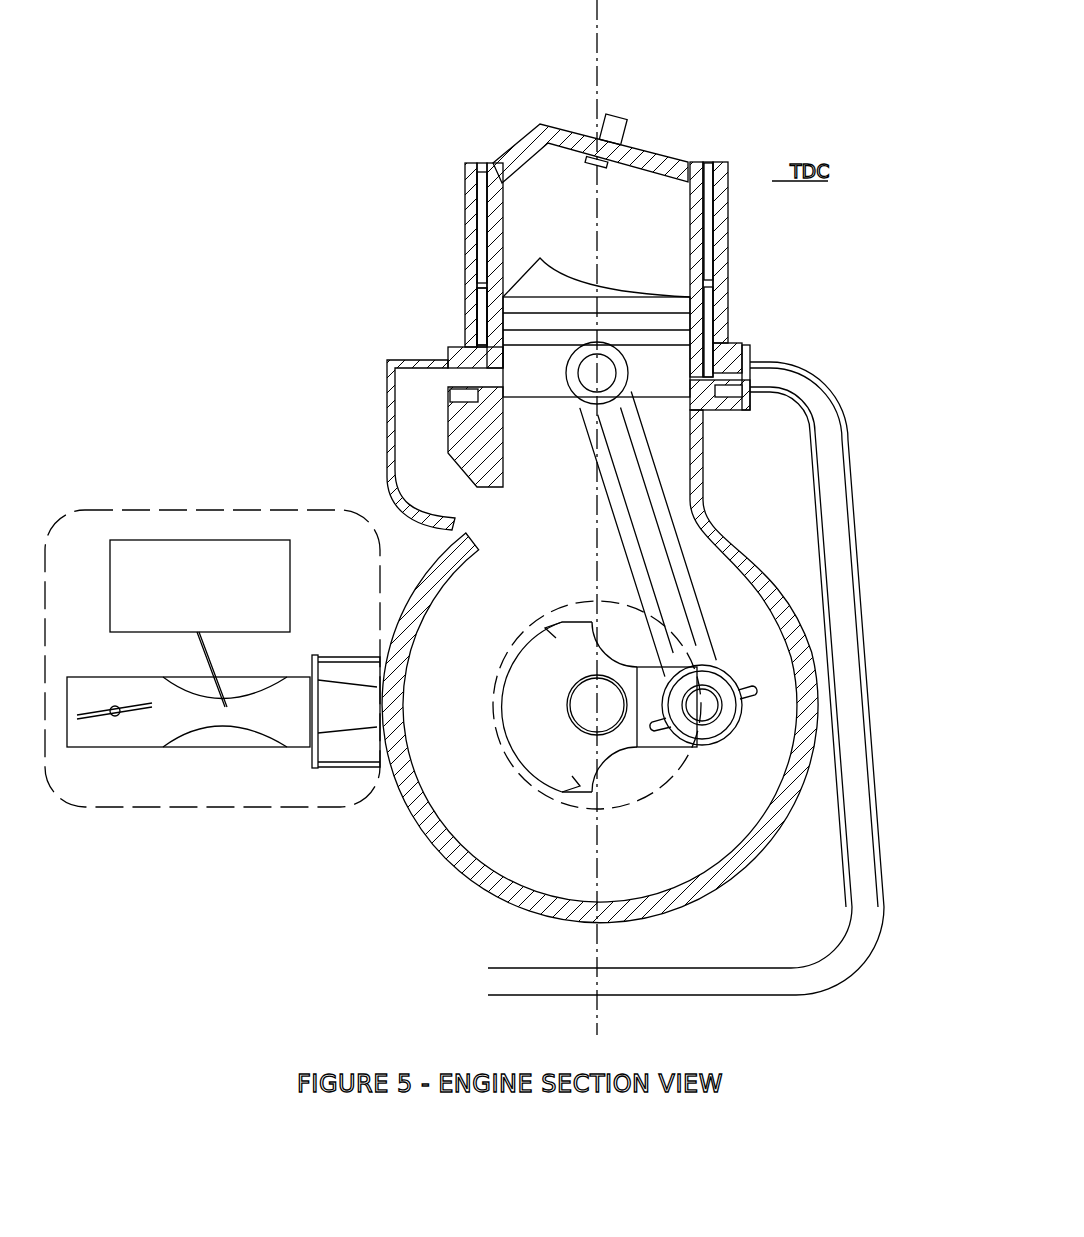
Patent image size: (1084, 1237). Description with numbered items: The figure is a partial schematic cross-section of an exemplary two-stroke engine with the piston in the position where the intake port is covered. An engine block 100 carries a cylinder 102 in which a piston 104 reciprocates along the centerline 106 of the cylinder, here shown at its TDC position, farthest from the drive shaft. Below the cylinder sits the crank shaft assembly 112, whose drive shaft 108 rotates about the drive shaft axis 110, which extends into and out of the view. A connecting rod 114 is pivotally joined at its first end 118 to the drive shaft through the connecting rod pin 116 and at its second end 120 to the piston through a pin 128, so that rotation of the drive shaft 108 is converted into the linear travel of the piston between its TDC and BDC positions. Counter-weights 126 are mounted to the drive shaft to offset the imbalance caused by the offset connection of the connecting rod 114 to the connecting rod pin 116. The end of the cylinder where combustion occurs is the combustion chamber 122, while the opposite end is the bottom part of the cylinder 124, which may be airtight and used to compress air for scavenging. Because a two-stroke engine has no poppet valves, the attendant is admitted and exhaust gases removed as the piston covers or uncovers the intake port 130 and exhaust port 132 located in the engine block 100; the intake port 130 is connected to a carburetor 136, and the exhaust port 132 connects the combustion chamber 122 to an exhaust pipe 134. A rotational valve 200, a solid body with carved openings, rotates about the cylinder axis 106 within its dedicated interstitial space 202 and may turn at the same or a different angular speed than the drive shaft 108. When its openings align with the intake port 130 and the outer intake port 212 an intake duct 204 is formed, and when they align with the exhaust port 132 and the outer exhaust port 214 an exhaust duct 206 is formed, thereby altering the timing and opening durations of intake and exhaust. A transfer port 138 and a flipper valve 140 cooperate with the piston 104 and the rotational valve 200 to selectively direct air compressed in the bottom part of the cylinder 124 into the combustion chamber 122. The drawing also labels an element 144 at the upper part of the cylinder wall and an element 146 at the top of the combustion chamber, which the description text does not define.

The engine block 100 is at (730, 243).
The cylinder 102 is at (692, 270).
The piston 104 is at (592, 280).
The centerline 106 is at (598, 95).
The drive shaft 108 is at (602, 673).
The drive shaft axis 110 is at (602, 705).
The crank shaft assembly 112 is at (705, 667).
The connecting rod 114 is at (692, 562).
The connecting rod pin 116 is at (708, 703).
The first end 118 is at (712, 725).
The second end 120 is at (745, 407).
The combustion chamber 122 is at (517, 253).
The bottom part of the cylinder 124 is at (753, 750).
The counter-weights 126 is at (553, 635).
The pin 128 is at (482, 307).
The intake port 130 is at (497, 373).
The exhaust port 132 is at (700, 373).
The exhaust pipe 134 is at (825, 462).
The carburetor 136 is at (212, 818).
The transfer port 138 is at (452, 497).
The flipper valve 140 is at (417, 380).
The upper ring 144 is at (478, 182).
The spark plug 146 is at (616, 110).
The rotational valve 200 is at (480, 303).
The interstitial space 202 is at (718, 318).
The intake duct 204 is at (408, 255).
The exhaust duct 206 is at (787, 269).
The outer intake port 212 is at (460, 375).
The outer exhaust port 214 is at (730, 380).